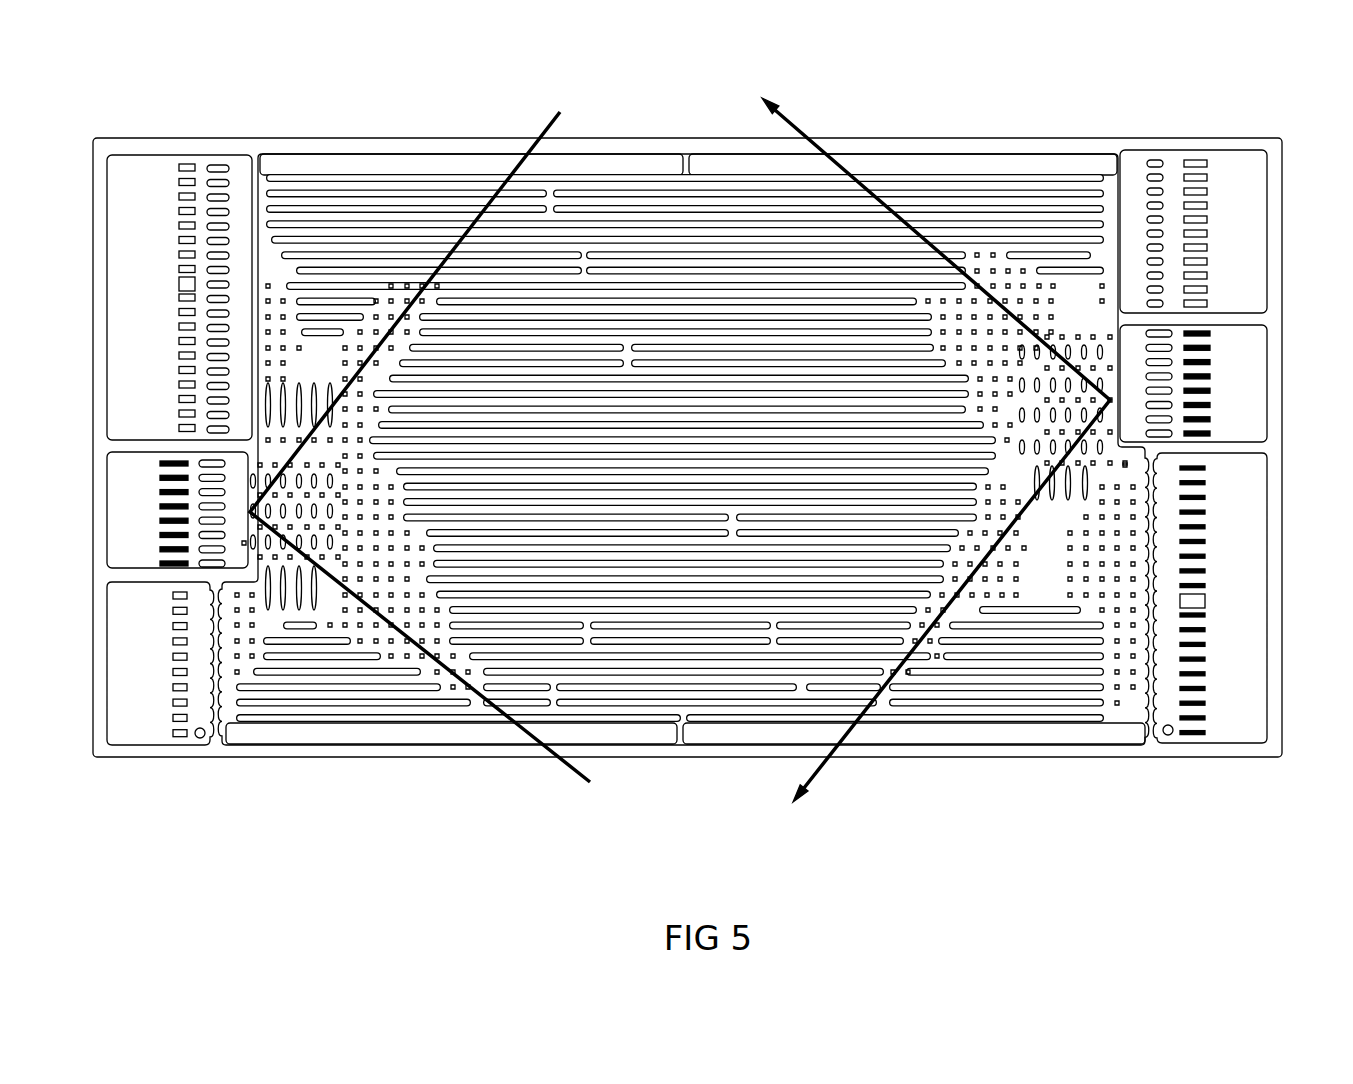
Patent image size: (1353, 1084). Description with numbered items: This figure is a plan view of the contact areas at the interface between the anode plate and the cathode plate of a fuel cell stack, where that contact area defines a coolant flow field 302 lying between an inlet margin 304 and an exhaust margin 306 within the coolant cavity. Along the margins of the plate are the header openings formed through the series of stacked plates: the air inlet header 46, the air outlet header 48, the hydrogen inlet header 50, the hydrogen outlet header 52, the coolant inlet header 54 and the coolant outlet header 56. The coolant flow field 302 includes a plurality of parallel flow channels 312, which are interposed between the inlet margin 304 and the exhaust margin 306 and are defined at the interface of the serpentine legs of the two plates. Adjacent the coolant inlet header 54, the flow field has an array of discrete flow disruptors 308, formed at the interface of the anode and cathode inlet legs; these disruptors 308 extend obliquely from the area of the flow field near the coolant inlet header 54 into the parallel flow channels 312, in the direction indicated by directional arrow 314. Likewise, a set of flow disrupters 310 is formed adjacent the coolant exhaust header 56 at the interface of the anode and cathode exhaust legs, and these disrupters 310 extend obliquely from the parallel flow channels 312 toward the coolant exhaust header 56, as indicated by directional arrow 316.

The coolant flow field 302 is at (745, 744).
The inlet margin 304 is at (1198, 495).
The exhaust margin 306 is at (171, 497).
The discrete flow disruptors 308 is at (1138, 471).
The flow disrupters 310 is at (227, 551).
The parallel flow channels 312 is at (640, 497).
The directional arrow 314 is at (972, 232).
The directional arrow 316 is at (418, 291).
The air inlet header 46 is at (1228, 613).
The air outlet header 48 is at (130, 308).
The hydrogen inlet header 50 is at (1228, 236).
The hydrogen outlet header 52 is at (128, 675).
The coolant inlet header 54 is at (1228, 391).
The coolant outlet header 56 is at (118, 520).